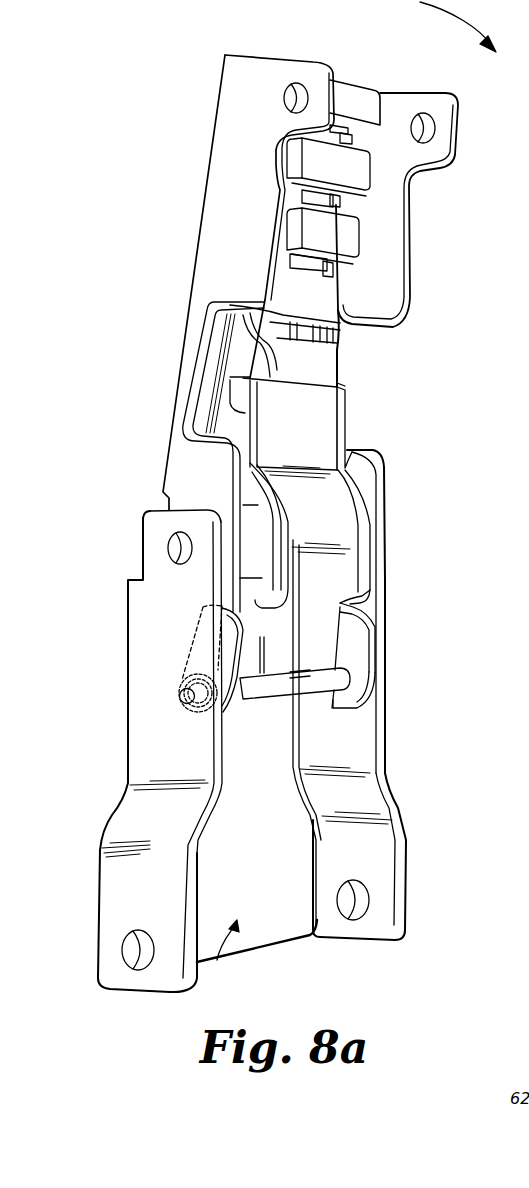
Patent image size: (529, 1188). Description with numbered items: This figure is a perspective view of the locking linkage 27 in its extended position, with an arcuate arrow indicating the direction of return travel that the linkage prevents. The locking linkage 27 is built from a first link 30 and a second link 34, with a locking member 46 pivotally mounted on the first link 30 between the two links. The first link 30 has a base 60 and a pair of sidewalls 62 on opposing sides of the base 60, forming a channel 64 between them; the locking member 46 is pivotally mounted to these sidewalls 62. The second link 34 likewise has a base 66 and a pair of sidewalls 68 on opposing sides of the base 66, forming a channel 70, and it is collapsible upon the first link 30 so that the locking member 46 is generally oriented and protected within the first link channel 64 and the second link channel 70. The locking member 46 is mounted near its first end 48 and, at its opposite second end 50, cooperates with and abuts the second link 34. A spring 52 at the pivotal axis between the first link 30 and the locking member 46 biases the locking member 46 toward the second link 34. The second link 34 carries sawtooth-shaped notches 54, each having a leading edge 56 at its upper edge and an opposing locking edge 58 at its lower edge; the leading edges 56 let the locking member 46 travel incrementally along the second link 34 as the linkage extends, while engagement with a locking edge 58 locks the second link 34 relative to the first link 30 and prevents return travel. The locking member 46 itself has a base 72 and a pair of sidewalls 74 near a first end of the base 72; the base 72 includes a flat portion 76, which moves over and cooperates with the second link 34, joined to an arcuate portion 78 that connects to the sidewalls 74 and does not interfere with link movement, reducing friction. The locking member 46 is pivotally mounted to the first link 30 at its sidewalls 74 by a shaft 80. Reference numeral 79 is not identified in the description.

The locking linkage 27 is at (106, 404).
The first link 30 is at (355, 792).
The second link 34 is at (443, 100).
The locking member 46 is at (347, 462).
The first end 48 is at (353, 692).
The second end 50 is at (347, 380).
The spring 52 is at (180, 688).
The notches 54 is at (333, 207).
The leading edge 56 is at (353, 80).
The locking edge 58 is at (380, 138).
The base 60 is at (277, 928).
The sidewalls 62 is at (133, 910).
The channel 64 is at (200, 968).
The base 66 is at (330, 270).
The sidewalls 68 is at (236, 150).
The channel 70 is at (312, 232).
The base 72 is at (333, 568).
The sidewalls 74 is at (233, 653).
The flat portion 76 is at (270, 415).
The arcuate portion 78 is at (340, 525).
The retainer plate 79 is at (360, 642).
The shaft 80 is at (273, 692).